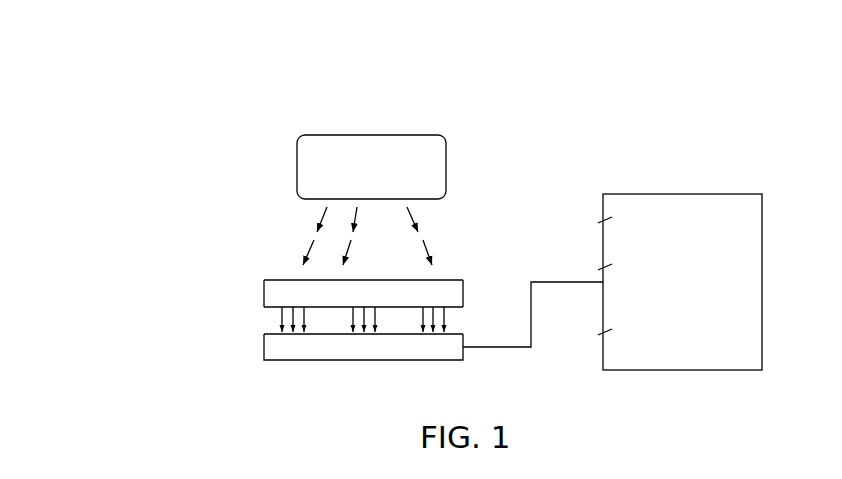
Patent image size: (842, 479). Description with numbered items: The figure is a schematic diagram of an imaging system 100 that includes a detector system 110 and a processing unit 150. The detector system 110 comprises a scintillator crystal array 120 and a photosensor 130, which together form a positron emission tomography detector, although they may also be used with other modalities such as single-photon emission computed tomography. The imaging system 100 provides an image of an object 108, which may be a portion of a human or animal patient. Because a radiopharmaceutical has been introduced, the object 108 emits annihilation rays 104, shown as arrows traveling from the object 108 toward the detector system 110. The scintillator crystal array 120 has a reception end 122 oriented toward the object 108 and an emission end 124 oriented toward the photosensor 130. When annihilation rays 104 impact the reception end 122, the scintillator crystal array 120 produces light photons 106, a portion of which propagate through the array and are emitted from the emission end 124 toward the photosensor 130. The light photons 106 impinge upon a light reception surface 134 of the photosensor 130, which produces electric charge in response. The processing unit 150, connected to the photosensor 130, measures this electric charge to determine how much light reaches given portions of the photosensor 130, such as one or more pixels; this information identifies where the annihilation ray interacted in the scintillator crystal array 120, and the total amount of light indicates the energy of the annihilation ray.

The imaging system 100 is at (578, 70).
The annihilation rays 104 is at (425, 245).
The light photons 106 is at (447, 332).
The object 108 is at (371, 135).
The detector system 110 is at (192, 343).
The scintillator crystal array 120 is at (248, 293).
The reception end 122 is at (384, 280).
The emission end 124 is at (273, 308).
The photosensor 130 is at (248, 348).
The light reception surface 134 is at (453, 333).
The processing unit 150 is at (682, 194).